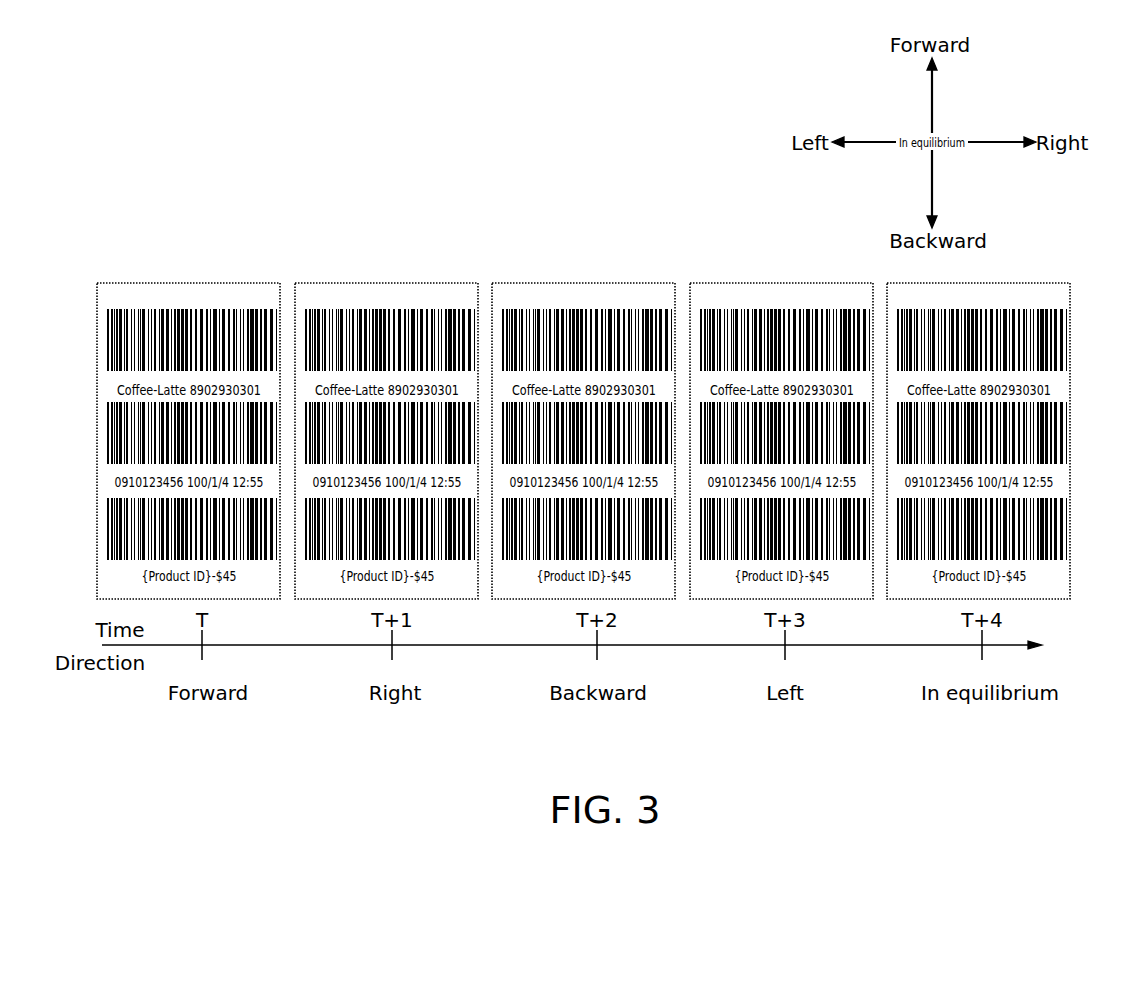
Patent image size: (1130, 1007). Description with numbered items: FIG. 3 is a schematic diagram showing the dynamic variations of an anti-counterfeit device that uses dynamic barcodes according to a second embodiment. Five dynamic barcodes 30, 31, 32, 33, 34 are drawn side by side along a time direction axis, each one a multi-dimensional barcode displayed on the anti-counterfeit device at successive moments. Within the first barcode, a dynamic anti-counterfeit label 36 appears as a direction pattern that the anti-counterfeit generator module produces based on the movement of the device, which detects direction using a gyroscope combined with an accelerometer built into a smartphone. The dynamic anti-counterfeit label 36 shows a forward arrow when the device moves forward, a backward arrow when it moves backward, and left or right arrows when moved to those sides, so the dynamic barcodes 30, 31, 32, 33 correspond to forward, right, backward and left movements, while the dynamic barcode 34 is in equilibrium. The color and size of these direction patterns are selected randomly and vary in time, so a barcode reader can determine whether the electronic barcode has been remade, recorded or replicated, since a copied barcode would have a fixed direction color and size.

The dynamic barcode 30 is at (188, 404).
The dynamic barcode 31 is at (362, 284).
The dynamic barcode 32 is at (565, 284).
The dynamic barcode 33 is at (757, 284).
The dynamic barcode 34 is at (962, 284).
The dynamic anti-counterfeit label 36 is at (166, 312).